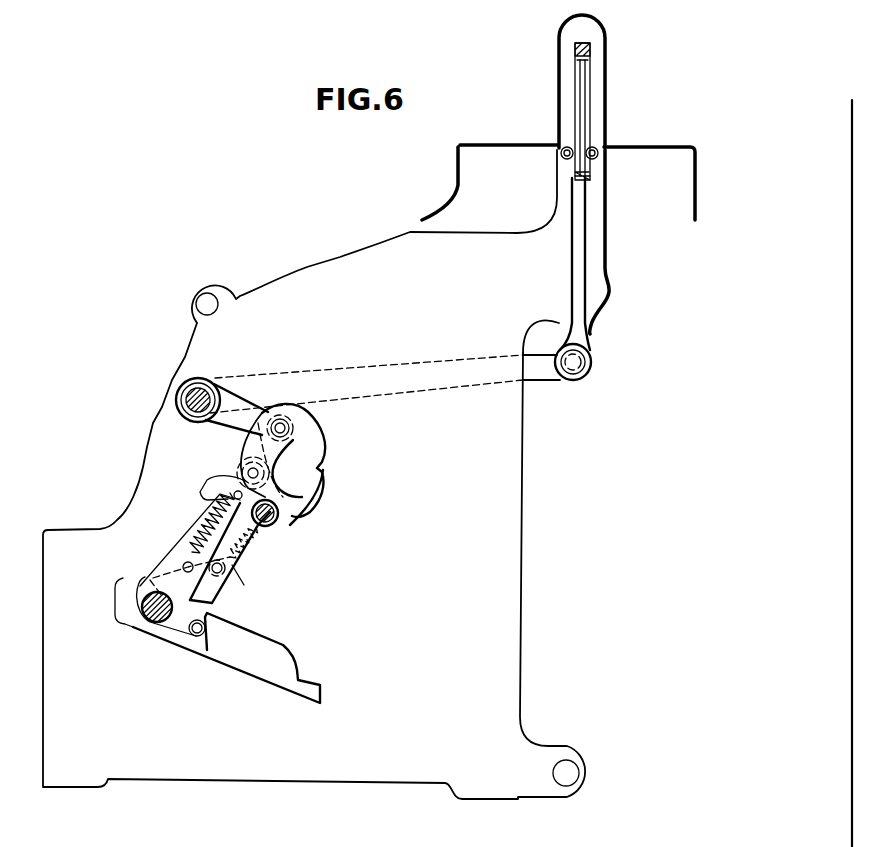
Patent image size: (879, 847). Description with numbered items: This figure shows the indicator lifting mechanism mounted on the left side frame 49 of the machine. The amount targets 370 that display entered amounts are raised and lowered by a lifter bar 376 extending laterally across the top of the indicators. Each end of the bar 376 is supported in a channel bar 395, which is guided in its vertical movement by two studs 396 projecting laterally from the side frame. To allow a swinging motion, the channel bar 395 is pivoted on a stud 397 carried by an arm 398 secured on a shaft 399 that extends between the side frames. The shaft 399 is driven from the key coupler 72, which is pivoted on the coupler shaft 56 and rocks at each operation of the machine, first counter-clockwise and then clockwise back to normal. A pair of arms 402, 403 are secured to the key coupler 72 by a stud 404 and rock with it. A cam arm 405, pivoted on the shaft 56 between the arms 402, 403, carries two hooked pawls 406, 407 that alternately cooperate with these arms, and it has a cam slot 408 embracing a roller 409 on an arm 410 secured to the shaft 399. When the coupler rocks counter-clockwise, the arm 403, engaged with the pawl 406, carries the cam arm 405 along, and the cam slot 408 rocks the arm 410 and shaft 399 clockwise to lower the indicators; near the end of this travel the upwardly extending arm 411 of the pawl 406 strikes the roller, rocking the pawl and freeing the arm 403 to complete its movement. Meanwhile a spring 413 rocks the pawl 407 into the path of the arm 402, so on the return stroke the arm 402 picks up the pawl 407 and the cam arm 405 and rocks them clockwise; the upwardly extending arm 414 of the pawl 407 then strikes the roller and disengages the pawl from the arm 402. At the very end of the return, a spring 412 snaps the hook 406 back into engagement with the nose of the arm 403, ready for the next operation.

The left side frame 49 is at (52, 657).
The coupler shaft 56 is at (152, 612).
The key coupler 72 is at (245, 664).
The amount target 370 is at (575, 90).
The lifter bar 376 is at (576, 45).
The channel bar 395 is at (578, 209).
The studs 396 is at (588, 158).
The stud 397 is at (585, 362).
The arm 398 is at (340, 373).
The shaft 399 is at (200, 393).
The arm 402 is at (250, 572).
The arm 403 is at (176, 556).
The stud 404 is at (196, 636).
The cam arm 405 is at (236, 572).
The hooked pawl 406 is at (220, 490).
The hooked pawl 407 is at (298, 516).
The cam slot 408 is at (308, 447).
The roller 409 is at (296, 420).
The arm 410 is at (224, 402).
The upwardly extending arm 411 is at (312, 478).
The spring 412 is at (200, 527).
The spring 413 is at (263, 553).
The upwardly extending arm 414 is at (255, 430).